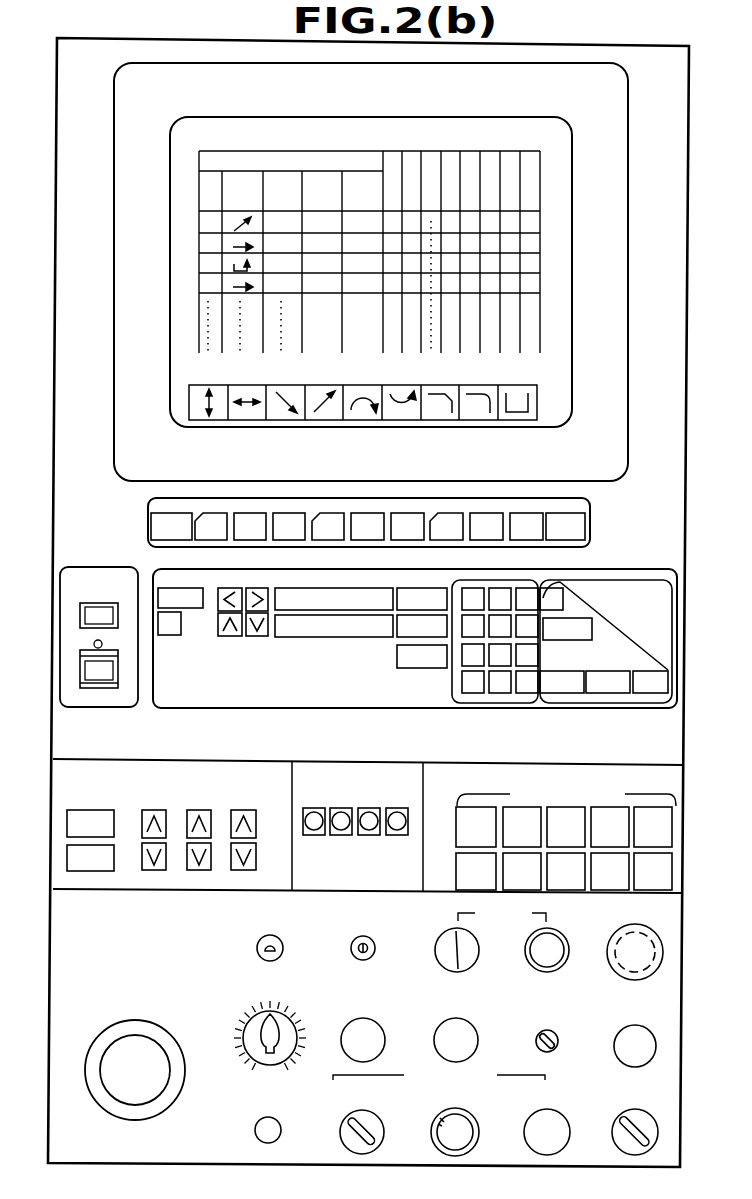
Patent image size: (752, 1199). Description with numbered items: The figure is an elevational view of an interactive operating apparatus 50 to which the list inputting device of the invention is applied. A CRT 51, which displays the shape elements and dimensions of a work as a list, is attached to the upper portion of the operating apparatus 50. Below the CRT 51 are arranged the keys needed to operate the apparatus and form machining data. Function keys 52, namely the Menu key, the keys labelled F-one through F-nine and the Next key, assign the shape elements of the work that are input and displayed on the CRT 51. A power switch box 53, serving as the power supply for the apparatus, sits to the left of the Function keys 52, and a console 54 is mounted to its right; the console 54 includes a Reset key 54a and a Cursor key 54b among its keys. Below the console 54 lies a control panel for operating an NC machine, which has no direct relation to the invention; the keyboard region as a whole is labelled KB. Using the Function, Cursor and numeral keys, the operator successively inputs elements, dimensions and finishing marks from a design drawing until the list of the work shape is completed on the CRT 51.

The operating apparatus 50 is at (51, 235).
The CRT 51 is at (573, 185).
The Function keys 52 is at (590, 541).
The power switch box 53 is at (77, 567).
The console 54 is at (283, 708).
The Reset key 54a is at (193, 608).
The Cursor key 54b is at (242, 636).
The keyboard KB is at (684, 1149).